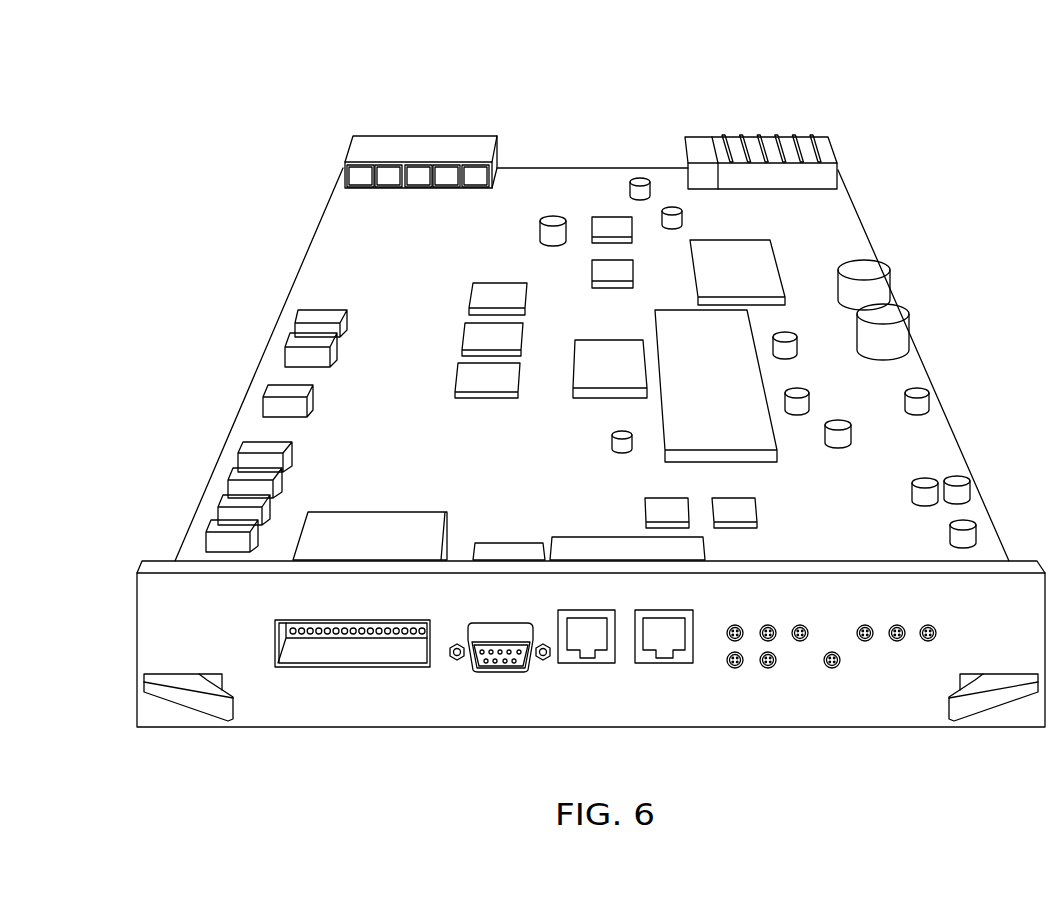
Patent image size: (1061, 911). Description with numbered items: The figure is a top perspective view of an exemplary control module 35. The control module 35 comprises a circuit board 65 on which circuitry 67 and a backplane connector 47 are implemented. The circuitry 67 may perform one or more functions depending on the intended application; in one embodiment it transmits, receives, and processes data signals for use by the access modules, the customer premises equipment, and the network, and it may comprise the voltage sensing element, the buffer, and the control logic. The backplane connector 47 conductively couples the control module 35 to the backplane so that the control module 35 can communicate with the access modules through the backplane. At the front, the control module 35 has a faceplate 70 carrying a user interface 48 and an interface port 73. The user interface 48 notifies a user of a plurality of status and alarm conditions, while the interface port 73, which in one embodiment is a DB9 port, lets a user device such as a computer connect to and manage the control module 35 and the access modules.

The control module 35 is at (636, 47).
The backplane connector 47 is at (767, 143).
The user interface 48 is at (965, 635).
The circuit board 65 is at (532, 185).
The circuitry 67 is at (456, 302).
The faceplate 70 is at (193, 633).
The interface port 73 is at (498, 665).